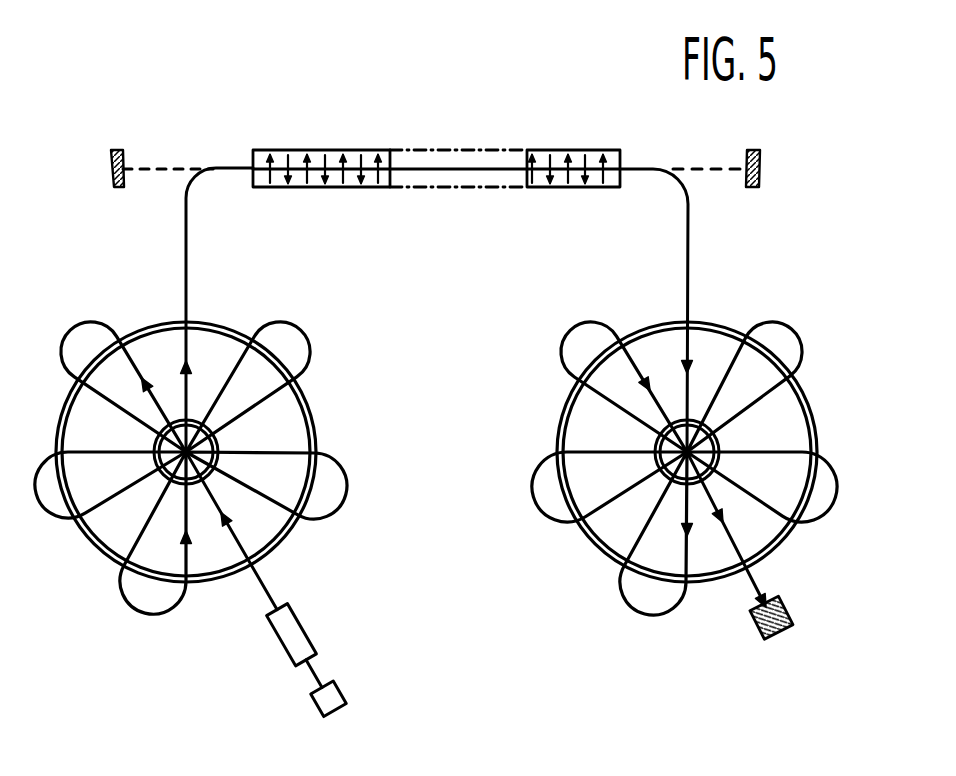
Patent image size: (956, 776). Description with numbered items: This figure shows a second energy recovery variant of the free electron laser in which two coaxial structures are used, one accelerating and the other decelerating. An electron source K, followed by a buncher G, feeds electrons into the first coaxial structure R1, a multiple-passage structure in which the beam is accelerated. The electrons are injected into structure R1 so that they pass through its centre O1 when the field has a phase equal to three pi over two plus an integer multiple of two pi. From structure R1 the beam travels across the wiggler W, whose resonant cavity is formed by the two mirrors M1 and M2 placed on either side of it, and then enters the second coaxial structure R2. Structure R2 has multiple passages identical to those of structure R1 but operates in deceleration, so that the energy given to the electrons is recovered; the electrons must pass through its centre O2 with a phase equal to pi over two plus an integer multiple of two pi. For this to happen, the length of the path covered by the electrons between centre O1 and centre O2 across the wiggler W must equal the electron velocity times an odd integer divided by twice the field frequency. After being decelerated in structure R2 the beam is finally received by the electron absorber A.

The coaxial structure R1 is at (86, 552).
The second coaxial structure R2 is at (598, 568).
The centre of structure R1 O1 is at (213, 438).
The centre of structure R2 O2 is at (660, 438).
The wiggler W is at (368, 187).
The mirror M1 is at (110, 173).
The mirror M2 is at (762, 165).
The buncher G is at (287, 622).
The electron source K is at (332, 697).
The electron absorber A is at (788, 627).